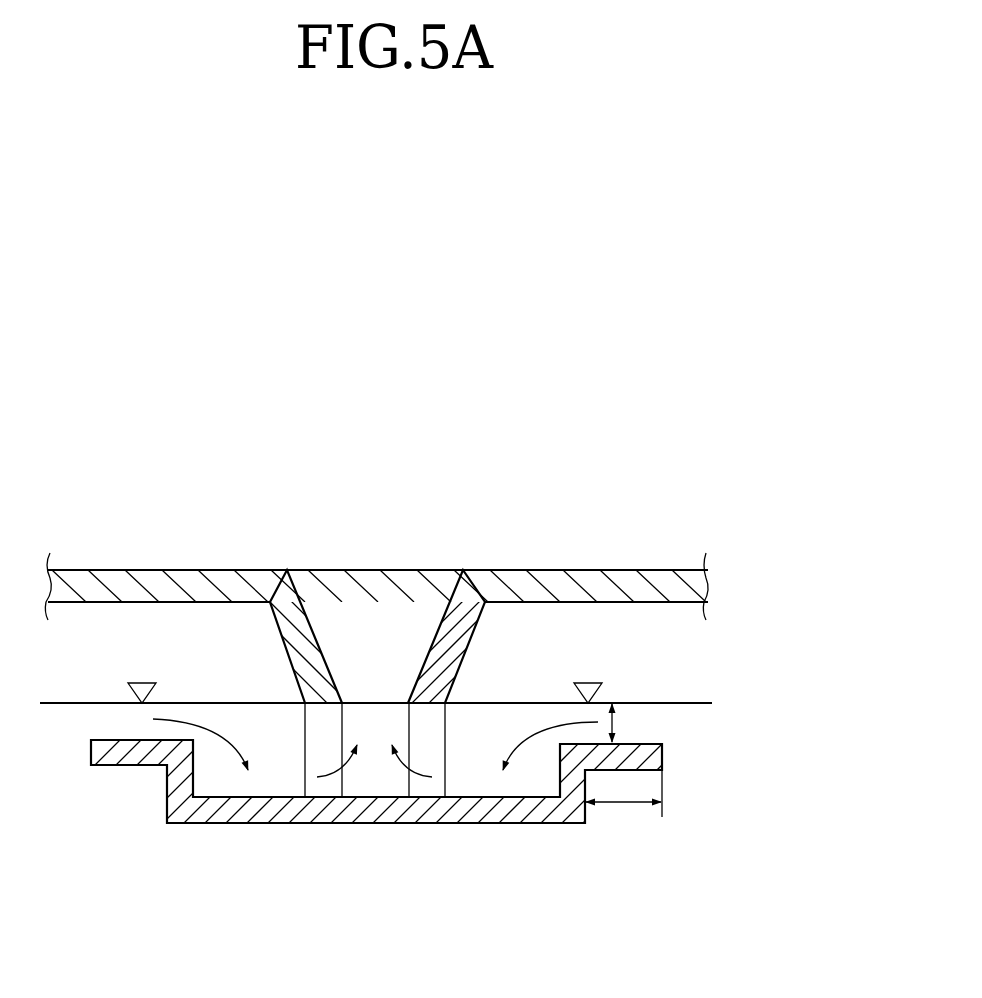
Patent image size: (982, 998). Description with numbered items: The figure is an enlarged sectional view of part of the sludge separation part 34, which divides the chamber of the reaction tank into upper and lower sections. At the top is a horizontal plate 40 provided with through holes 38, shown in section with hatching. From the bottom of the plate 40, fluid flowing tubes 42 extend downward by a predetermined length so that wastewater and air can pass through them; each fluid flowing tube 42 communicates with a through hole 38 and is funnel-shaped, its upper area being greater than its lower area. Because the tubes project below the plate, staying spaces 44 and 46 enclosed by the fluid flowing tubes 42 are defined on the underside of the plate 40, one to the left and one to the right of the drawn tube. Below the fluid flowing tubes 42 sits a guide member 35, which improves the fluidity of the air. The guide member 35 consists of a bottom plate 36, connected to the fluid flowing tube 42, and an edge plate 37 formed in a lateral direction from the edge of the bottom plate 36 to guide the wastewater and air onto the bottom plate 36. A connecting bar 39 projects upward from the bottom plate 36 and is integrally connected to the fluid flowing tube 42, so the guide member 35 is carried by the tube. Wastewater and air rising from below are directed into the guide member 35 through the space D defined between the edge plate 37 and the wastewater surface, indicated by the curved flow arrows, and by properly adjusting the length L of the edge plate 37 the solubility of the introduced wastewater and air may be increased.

The sludge separation part 34 is at (440, 674).
The guide member 35 is at (409, 834).
The bottom plate 36 is at (288, 880).
The edge plate 37 is at (102, 820).
The through holes 38 is at (376, 547).
The connecting bar 39 is at (438, 695).
The plate 40 is at (613, 521).
The fluid flowing tube 42 is at (445, 637).
The staying space 44 is at (140, 531).
The staying space 46 is at (682, 511).
The space D is at (683, 727).
The length of the edge plate L is at (624, 842).